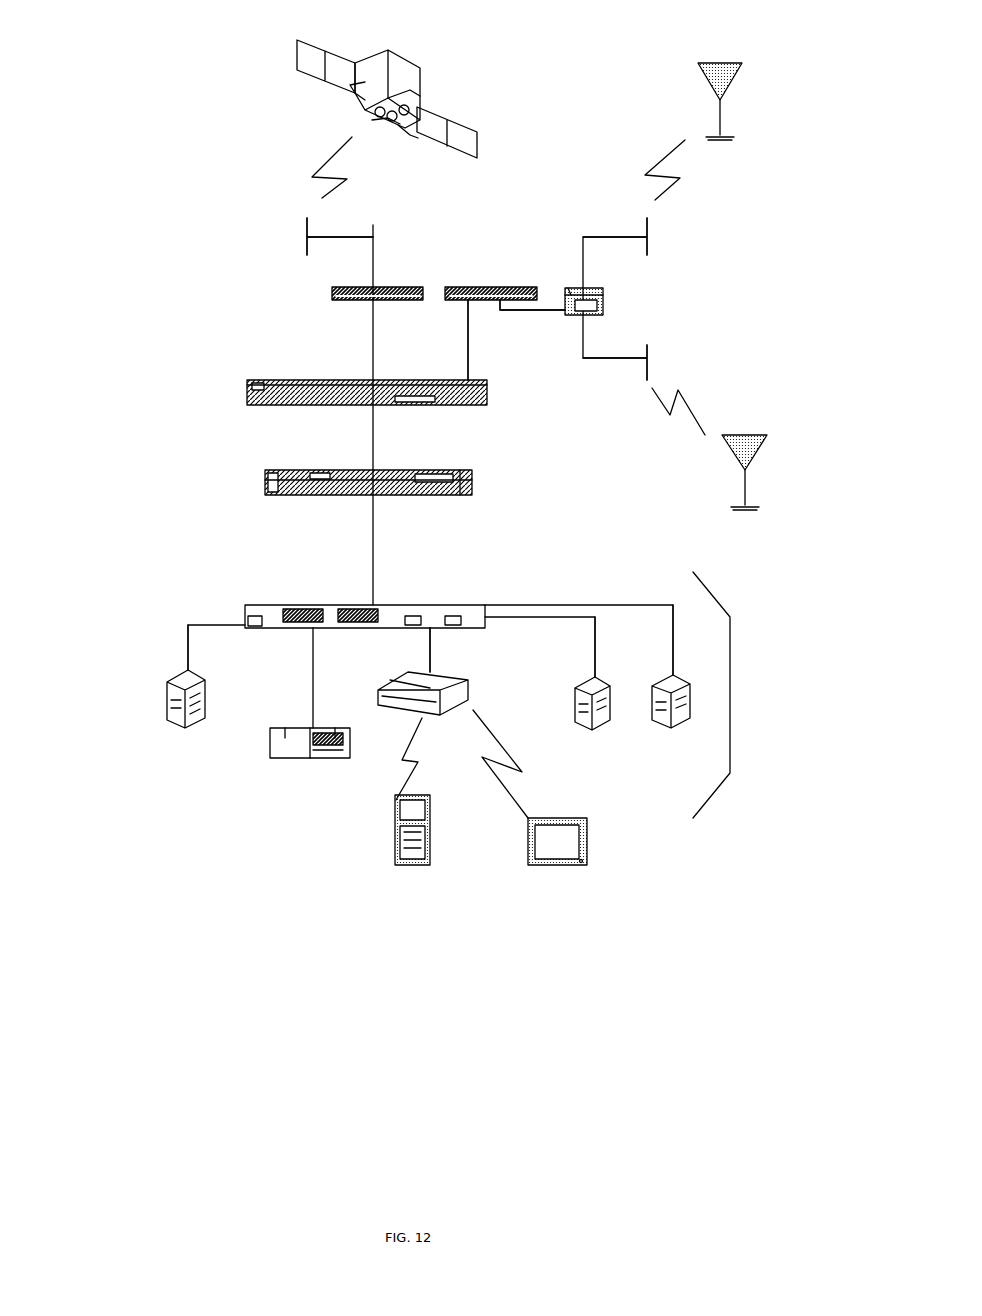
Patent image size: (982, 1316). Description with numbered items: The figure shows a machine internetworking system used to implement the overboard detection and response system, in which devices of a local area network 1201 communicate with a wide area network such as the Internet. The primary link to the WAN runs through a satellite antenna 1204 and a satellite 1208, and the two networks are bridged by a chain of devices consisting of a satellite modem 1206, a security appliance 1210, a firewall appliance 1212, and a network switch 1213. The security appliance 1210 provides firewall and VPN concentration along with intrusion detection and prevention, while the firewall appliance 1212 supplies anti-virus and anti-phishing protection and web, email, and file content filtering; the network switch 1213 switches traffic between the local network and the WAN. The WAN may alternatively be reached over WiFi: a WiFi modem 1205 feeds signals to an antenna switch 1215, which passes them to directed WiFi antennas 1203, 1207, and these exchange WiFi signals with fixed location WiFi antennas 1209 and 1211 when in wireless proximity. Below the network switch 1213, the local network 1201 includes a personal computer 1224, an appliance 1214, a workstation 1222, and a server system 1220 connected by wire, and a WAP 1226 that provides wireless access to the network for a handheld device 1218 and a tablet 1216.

The satellite 1208 is at (387, 119).
The fixed location WiFi antenna 1209 is at (726, 106).
The satellite antenna 1204 is at (260, 236).
The satellite modem 1206 is at (288, 292).
The WiFi modem 1205 is at (496, 309).
The antenna switch 1215 is at (625, 301).
The directed WiFi antenna 1203 is at (697, 240).
The directed WiFi antenna 1207 is at (697, 390).
The fixed location WiFi antenna 1211 is at (678, 472).
The security appliance 1210 is at (274, 392).
The firewall appliance 1212 is at (279, 483).
The network switch 1213 is at (365, 588).
The personal computer 1224 is at (178, 702).
The appliance 1214 is at (315, 760).
The WAP 1226 is at (454, 723).
The workstation 1222 is at (580, 692).
The server system 1220 is at (673, 694).
The handheld device 1218 is at (445, 847).
The tablet 1216 is at (584, 859).
The local area network 1201 is at (743, 695).